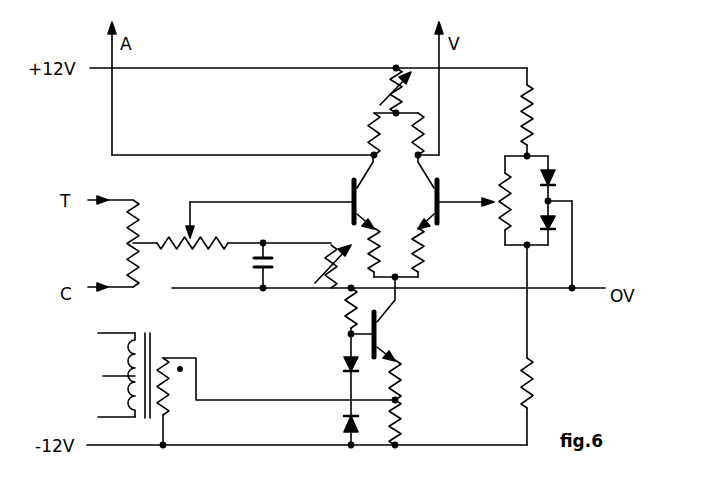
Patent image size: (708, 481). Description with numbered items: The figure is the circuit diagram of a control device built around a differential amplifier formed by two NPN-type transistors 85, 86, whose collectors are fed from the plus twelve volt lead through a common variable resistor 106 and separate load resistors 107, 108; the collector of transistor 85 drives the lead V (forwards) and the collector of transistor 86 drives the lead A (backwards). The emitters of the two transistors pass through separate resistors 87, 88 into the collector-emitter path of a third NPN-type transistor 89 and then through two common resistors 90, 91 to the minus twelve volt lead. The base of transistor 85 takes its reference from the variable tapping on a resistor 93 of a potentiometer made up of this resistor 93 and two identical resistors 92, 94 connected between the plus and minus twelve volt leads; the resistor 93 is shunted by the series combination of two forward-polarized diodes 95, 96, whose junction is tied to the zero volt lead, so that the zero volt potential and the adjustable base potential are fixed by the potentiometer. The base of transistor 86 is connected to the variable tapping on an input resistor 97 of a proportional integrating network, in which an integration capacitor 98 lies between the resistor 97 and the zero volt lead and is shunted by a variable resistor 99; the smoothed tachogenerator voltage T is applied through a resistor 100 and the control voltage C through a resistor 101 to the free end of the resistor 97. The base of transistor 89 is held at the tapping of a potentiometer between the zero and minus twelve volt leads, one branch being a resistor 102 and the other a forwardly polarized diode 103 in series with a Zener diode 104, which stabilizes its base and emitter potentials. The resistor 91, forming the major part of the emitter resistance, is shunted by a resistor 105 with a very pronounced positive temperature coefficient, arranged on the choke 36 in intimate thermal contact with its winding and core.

The choke 36 is at (148, 333).
The NPN-type transistor 85 is at (428, 204).
The NPN-type transistor 86 is at (364, 201).
The resistor 87 is at (423, 238).
The resistor 88 is at (368, 241).
The third NPN-type transistor 89 is at (380, 333).
The common resistor 90 is at (409, 378).
The common resistor 91 is at (411, 430).
The resistor 92 is at (535, 106).
The resistor 93 is at (498, 212).
The resistor 94 is at (535, 388).
The diode 95 is at (558, 173).
The diode 96 is at (557, 221).
The input resistor 97 is at (190, 251).
The integration capacitor 98 is at (253, 263).
The variable resistor 99 is at (323, 255).
The resistor 100 is at (143, 225).
The resistor 101 is at (124, 260).
The resistor 102 is at (343, 311).
The forwardly polarized diode 103 is at (341, 362).
The Zener diode 104 is at (337, 426).
The resistor 105 is at (170, 397).
The common variable resistor 106 is at (392, 80).
The load resistor 107 is at (429, 137).
The load resistor 108 is at (366, 135).